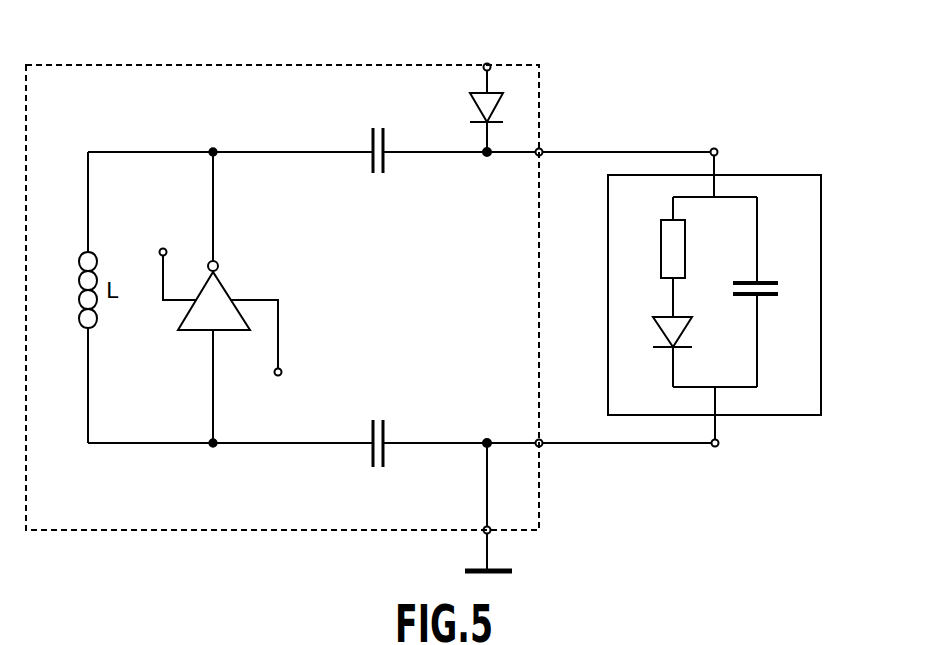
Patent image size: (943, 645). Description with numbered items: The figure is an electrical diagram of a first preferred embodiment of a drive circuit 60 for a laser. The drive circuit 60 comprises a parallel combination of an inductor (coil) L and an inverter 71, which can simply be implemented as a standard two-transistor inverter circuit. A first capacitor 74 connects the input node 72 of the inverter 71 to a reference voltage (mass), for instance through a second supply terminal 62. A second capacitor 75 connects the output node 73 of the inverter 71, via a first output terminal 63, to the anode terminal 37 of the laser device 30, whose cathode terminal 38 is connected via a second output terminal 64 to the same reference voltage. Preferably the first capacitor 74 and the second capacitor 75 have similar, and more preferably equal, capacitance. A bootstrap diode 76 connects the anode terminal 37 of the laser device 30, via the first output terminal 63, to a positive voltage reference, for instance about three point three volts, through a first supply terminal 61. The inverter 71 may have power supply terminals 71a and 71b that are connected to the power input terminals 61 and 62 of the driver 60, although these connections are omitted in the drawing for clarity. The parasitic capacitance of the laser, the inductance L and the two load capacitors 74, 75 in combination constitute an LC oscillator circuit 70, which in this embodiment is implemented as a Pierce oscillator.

The laser device 30 is at (821, 252).
The anode terminal 37 is at (722, 139).
The cathode terminal 38 is at (727, 454).
The drive circuit 60 is at (257, 65).
The first supply terminal 61 is at (490, 64).
The second supply terminal 62 is at (491, 533).
The first output terminal 63 is at (542, 149).
The second output terminal 64 is at (542, 447).
The LC oscillator circuit 70 is at (806, 115).
The inverter 71 is at (214, 295).
The power supply terminal 71a is at (172, 262).
The power supply terminal 71b is at (259, 351).
The input node 72 is at (208, 459).
The output node 73 is at (212, 138).
The first capacitor 74 is at (377, 429).
The second capacitor 75 is at (378, 165).
The bootstrap diode 76 is at (472, 113).